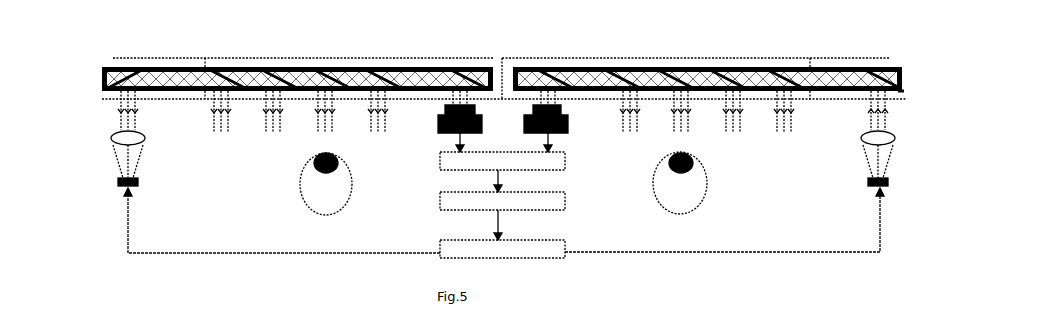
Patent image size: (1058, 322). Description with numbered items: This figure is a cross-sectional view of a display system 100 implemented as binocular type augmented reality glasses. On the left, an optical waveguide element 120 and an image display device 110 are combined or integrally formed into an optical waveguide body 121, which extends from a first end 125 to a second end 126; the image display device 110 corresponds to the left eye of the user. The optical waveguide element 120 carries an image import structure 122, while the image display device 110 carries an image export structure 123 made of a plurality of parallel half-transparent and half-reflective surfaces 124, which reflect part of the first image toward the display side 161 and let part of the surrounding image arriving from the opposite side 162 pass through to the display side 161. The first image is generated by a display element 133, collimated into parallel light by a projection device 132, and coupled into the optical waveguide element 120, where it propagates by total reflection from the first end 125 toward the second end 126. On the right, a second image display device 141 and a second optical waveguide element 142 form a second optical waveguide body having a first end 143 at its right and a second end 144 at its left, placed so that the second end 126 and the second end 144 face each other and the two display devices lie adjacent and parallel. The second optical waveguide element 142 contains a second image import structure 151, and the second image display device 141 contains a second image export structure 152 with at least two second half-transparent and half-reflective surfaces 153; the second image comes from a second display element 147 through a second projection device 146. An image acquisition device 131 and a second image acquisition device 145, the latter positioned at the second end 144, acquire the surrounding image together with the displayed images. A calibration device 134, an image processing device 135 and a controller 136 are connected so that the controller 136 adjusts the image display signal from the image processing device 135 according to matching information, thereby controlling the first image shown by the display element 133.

The display system 100 is at (895, 35).
The image display device 110 is at (267, 84).
The optical waveguide element 120 is at (97, 65).
The optical waveguide body 121 is at (110, 80).
The image import structure 122 is at (91, 61).
The image export structure 123 is at (348, 62).
The half-transparent and half-reflective surfaces 124 is at (348, 62).
The first end 125 is at (123, 87).
The second end 126 is at (493, 99).
The image acquisition device 131 is at (427, 144).
The projection device 132 is at (93, 118).
The display element 133 is at (92, 165).
The calibration device 134 is at (474, 172).
The image processing device 135 is at (504, 223).
The controller 136 is at (443, 200).
The second image display device 141 is at (834, 93).
The second optical waveguide element 142 is at (927, 107).
The first end 143 is at (905, 81).
The second end 144 is at (540, 83).
The second image acquisition device 145 is at (583, 144).
The second projection device 146 is at (909, 130).
The second display element 147 is at (905, 181).
The second image import structure 151 is at (735, 60).
The second image export structure 152 is at (719, 60).
The second half-transparent and half-reflective surfaces 153 is at (719, 60).
The display side 161 is at (439, 183).
The opposite side 162 is at (184, 30).